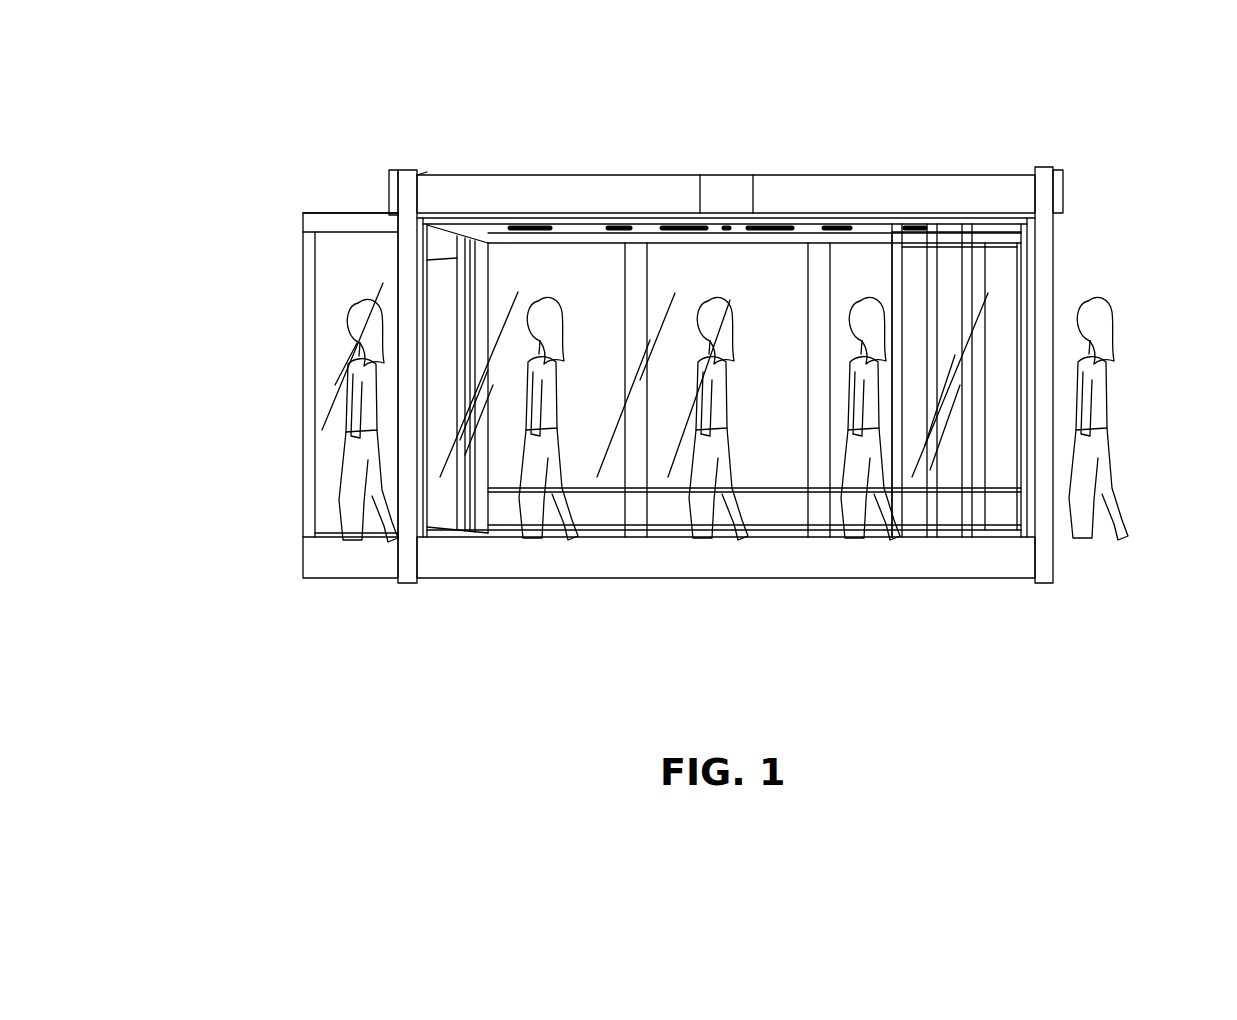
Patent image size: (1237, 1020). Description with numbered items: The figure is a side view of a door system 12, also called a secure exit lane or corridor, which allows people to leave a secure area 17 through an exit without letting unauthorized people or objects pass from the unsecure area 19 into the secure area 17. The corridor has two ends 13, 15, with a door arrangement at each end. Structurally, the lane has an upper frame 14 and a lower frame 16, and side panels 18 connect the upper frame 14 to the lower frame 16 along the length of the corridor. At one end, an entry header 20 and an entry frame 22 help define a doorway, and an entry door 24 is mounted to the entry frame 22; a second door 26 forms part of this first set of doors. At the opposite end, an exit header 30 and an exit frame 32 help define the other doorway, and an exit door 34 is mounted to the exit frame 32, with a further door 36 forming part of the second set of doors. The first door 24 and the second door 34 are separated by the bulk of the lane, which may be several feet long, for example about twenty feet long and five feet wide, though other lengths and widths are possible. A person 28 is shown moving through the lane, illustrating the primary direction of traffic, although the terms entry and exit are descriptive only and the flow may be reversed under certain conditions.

The door system 12 is at (732, 376).
The end 13 is at (1137, 301).
The upper frame 14 is at (965, 186).
The end 15 is at (278, 423).
The lower frame 16 is at (935, 552).
The secure area 17 is at (1206, 507).
The side panels 18 is at (768, 275).
The unsecure area 19 is at (222, 526).
The entry header 20 is at (1052, 170).
The entry frame 22 is at (1042, 231).
The entry door 24 is at (995, 290).
The door 26 is at (908, 262).
The person 28 is at (1108, 350).
The exit header 30 is at (408, 174).
The exit frame 32 is at (410, 210).
The exit door 34 is at (325, 275).
The door 36 is at (442, 268).